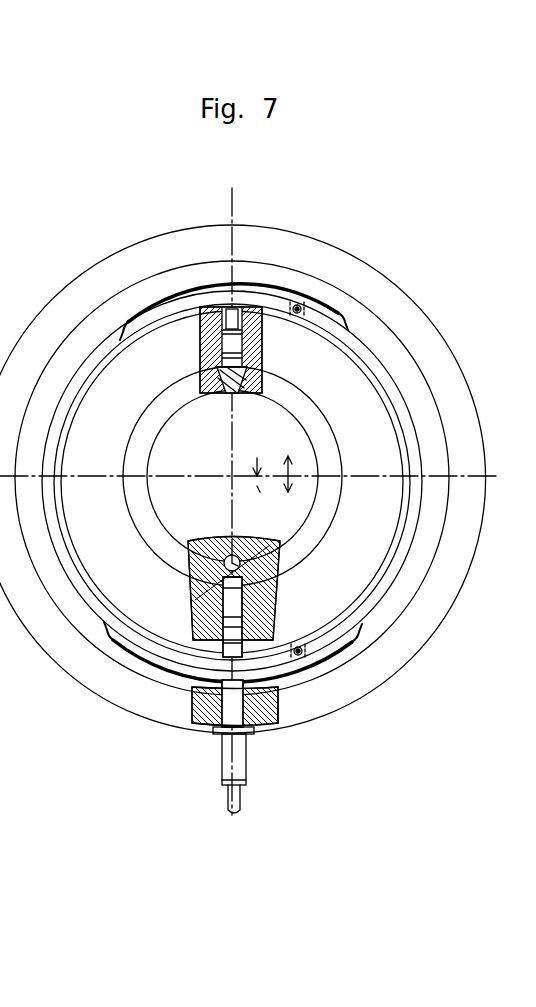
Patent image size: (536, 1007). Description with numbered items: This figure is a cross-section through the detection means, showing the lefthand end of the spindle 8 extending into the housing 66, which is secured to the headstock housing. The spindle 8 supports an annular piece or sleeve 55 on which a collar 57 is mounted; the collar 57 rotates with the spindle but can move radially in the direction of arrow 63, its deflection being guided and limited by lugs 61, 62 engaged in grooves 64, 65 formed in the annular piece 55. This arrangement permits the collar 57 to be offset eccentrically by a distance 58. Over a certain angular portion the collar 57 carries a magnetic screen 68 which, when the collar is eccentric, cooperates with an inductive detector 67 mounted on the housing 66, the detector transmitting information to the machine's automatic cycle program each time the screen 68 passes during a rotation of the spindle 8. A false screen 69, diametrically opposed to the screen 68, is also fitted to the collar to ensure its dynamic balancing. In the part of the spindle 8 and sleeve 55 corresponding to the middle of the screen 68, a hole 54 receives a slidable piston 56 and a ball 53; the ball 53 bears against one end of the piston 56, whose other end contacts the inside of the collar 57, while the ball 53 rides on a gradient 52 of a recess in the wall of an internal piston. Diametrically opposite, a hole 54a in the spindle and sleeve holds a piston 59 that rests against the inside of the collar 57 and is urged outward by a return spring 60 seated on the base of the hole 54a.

The spindle 8 is at (200, 307).
The gradient 52 is at (270, 622).
The ball 53 is at (318, 640).
The hole 54 is at (190, 598).
The hole 54a is at (220, 307).
The annular piece or sleeve 55 is at (147, 373).
The piston 56 is at (305, 660).
The collar 57 is at (97, 604).
The distance 58 is at (283, 578).
The piston 59 is at (238, 305).
The return spring 60 is at (290, 468).
The lug 61 is at (297, 304).
The lug 62 is at (300, 660).
The arrow 63 is at (262, 374).
The groove 64 is at (300, 308).
The groove 65 is at (302, 656).
The housing 66 is at (287, 713).
The inductive detector 67 is at (230, 767).
The magnetic screen 68 is at (190, 692).
The false screen 69 is at (187, 390).